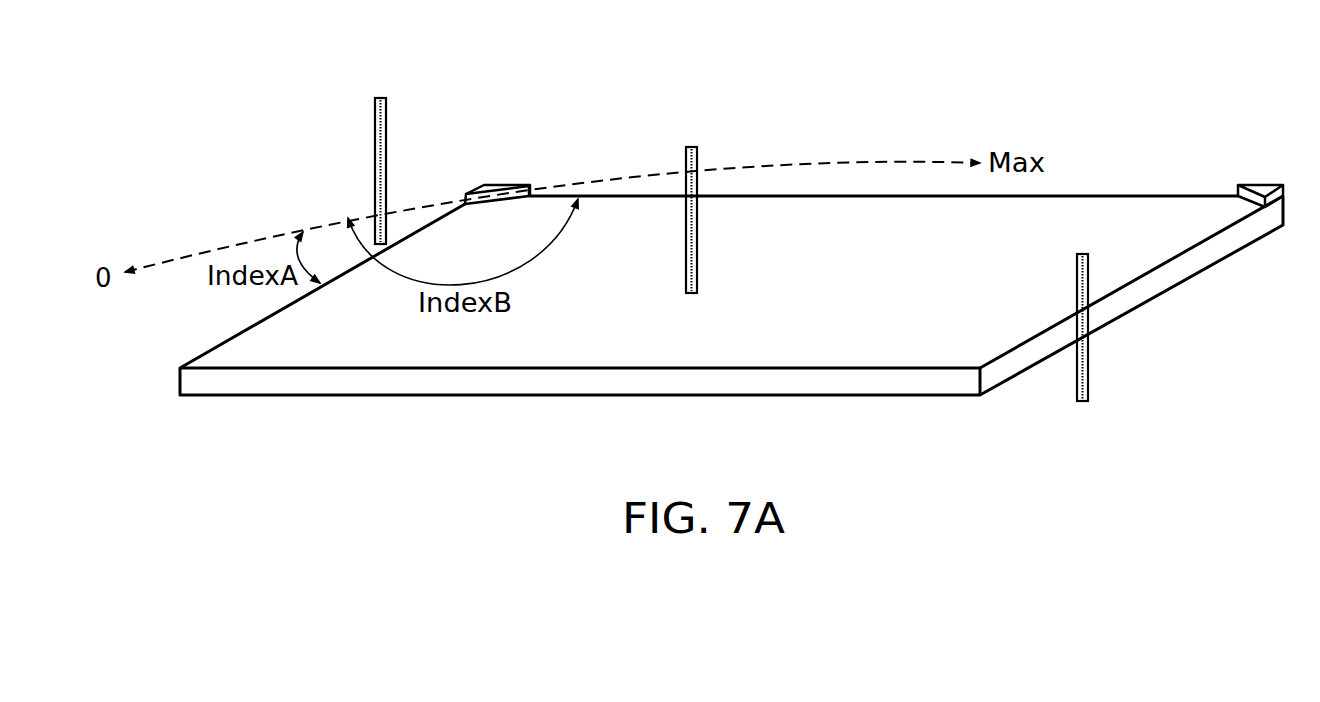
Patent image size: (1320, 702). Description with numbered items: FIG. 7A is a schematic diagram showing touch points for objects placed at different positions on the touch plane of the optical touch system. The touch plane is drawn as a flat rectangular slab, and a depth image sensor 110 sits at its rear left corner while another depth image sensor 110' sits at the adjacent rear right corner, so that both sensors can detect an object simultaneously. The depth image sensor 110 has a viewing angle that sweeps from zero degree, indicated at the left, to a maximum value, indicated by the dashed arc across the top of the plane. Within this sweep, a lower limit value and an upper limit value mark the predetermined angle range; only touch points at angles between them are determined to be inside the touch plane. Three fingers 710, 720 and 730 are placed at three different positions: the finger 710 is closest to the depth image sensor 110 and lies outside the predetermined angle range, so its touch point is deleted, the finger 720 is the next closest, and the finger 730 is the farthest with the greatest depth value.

The finger 710 is at (386, 121).
The finger 720 is at (697, 254).
The finger 730 is at (1088, 372).
The depth image sensor 110 is at (500, 161).
The depth image sensor 110' is at (1274, 163).